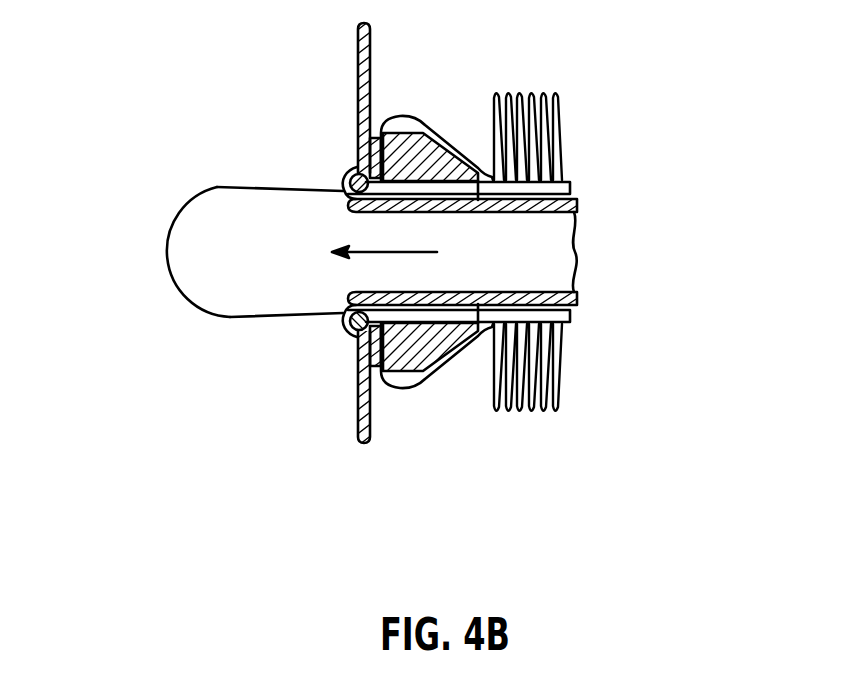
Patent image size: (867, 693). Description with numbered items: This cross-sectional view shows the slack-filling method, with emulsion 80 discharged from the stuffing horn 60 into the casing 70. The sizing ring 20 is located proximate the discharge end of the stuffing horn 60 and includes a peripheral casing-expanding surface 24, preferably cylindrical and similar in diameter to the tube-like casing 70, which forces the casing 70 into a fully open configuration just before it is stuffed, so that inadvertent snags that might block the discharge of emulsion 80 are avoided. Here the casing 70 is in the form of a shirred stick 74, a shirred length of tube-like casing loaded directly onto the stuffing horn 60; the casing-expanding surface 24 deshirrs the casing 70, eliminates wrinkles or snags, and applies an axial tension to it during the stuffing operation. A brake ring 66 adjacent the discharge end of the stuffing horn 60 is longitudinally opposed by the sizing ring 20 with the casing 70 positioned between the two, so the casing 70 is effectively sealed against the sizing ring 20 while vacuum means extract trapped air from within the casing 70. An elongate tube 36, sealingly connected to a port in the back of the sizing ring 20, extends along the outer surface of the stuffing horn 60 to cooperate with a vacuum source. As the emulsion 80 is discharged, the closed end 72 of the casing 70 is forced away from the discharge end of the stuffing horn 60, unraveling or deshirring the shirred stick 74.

The sizing ring 20 is at (437, 402).
The casing-expanding surface 24 is at (412, 390).
The elongate tube 36 is at (578, 183).
The stuffing horn 60 is at (600, 222).
The brake ring 66 is at (353, 180).
The casing 70 is at (433, 128).
The closed end 72 is at (172, 236).
The shirred stick 74 is at (473, 72).
The emulsion 80 is at (233, 210).